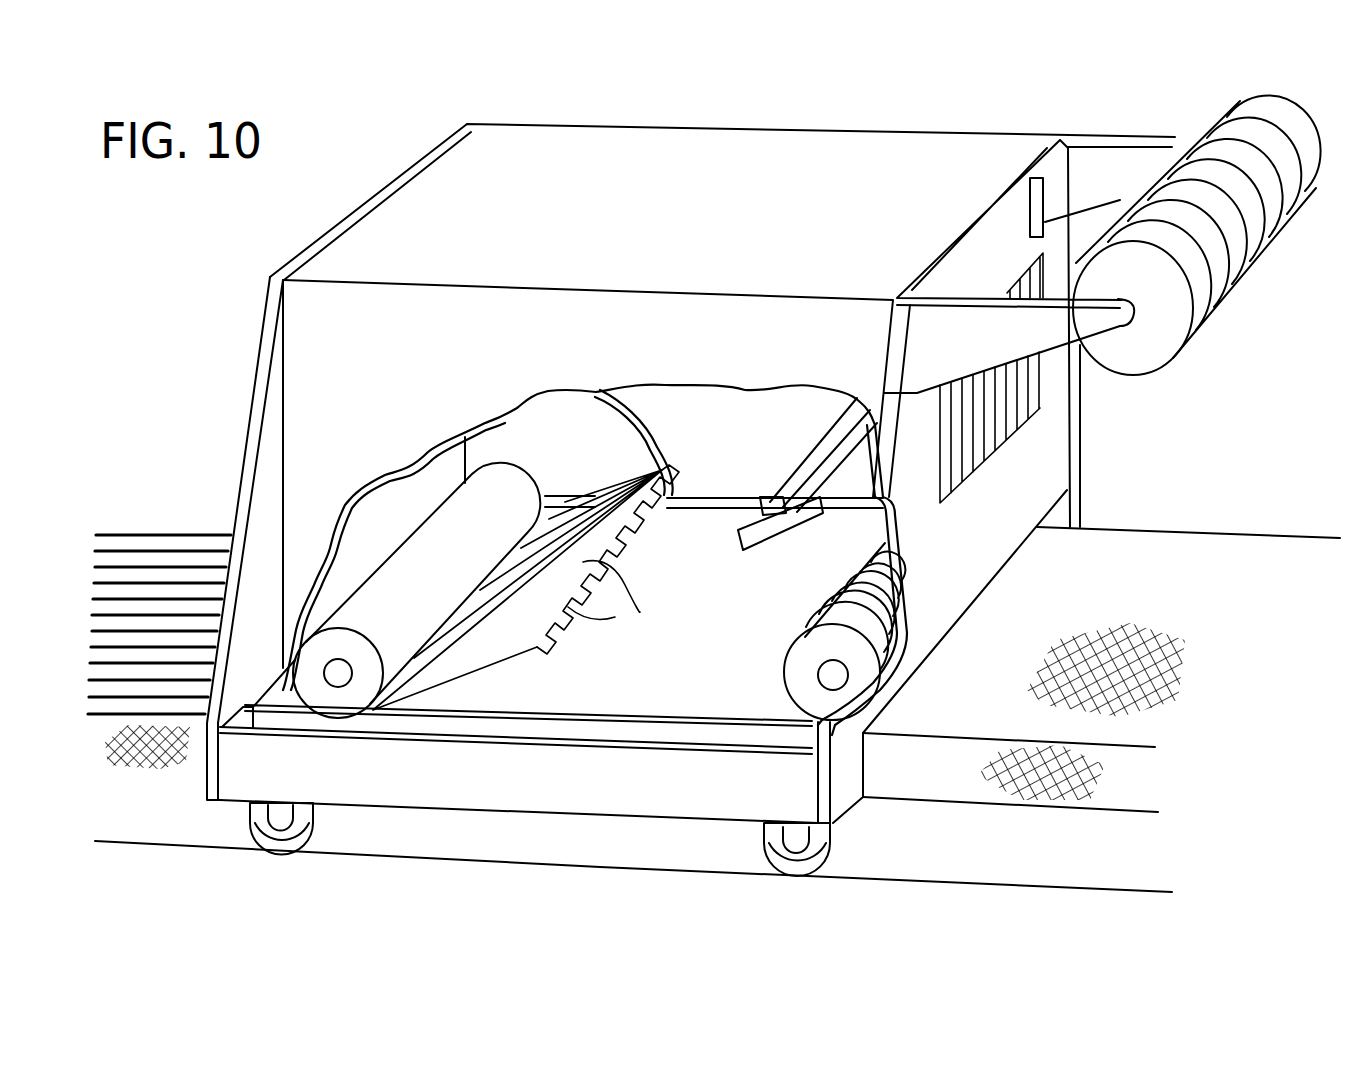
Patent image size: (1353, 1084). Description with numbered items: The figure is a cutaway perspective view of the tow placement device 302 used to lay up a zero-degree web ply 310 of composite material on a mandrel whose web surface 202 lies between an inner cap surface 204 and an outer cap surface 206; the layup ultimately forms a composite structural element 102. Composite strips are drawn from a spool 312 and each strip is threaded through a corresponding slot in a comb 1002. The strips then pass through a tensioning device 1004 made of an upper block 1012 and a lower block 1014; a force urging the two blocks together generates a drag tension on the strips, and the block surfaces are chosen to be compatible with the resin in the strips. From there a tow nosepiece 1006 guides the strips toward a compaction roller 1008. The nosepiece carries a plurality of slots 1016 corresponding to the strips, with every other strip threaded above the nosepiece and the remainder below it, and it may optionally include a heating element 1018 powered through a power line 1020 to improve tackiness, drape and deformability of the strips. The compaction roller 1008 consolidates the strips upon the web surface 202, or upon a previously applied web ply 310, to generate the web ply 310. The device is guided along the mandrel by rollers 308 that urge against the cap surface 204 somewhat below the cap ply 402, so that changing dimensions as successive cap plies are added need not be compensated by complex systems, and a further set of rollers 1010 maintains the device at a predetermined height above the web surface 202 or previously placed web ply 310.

The composite structural element 102 is at (203, 527).
The web surface 202 is at (1163, 567).
The inner cap surface 204 is at (938, 860).
The outer cap surface 206 is at (1135, 508).
The tow placement device 302 is at (862, 150).
The rollers 308 is at (272, 862).
The web ply 310 is at (157, 573).
The spool 312 is at (1157, 353).
The cap ply 402 is at (1136, 787).
The comb 1002 is at (980, 460).
The tensioning device 1004 is at (815, 447).
The tow nosepiece 1006 is at (520, 647).
The compaction roller 1008 is at (500, 480).
The rollers 1010 is at (807, 653).
The upper block 1012 is at (782, 483).
The lower block 1014 is at (775, 528).
The slots 1016 is at (630, 560).
The heating element 1018 is at (688, 478).
The power line 1020 is at (633, 427).